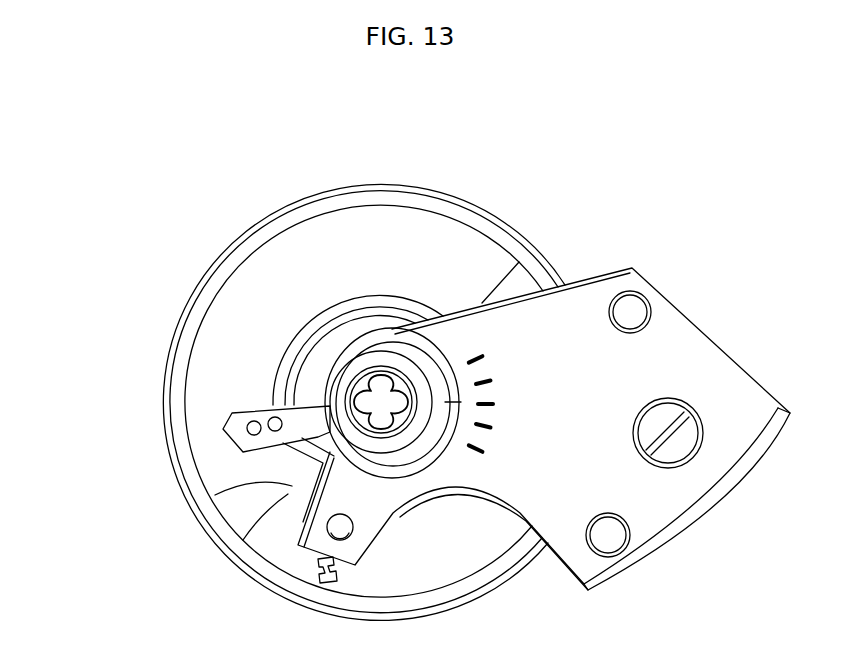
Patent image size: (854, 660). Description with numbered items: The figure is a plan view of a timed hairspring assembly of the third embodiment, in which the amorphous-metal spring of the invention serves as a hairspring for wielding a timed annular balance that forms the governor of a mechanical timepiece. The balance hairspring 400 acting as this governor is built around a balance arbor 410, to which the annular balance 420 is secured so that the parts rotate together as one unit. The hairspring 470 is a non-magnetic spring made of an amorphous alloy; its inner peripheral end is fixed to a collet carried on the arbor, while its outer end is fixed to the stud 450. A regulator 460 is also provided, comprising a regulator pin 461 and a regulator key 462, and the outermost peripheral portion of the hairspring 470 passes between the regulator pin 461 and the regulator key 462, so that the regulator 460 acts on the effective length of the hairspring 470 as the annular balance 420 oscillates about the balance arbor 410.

The balance hairspring 400 is at (200, 197).
The balance arbor 410 is at (377, 395).
The annular balance 420 is at (217, 263).
The stud 450 is at (326, 530).
The regulator 460 is at (265, 473).
The regulator pin 461 is at (251, 425).
The regulator key 462 is at (240, 443).
The hairspring 470 is at (283, 352).